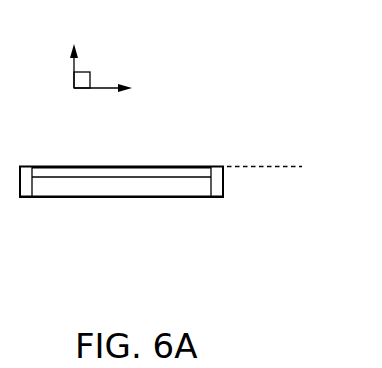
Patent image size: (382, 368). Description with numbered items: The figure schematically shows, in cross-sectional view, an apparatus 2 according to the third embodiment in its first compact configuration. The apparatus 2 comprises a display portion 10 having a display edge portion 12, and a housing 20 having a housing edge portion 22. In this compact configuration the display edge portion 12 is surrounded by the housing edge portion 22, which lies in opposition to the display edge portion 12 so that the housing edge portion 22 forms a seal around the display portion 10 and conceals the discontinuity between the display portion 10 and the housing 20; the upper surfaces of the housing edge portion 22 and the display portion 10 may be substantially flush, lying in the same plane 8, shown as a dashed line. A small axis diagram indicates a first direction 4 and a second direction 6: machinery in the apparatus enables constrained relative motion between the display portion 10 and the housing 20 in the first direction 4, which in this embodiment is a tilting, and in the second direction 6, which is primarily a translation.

The apparatus 2 is at (154, 174).
The first direction 4 is at (74, 67).
The second direction 6 is at (105, 88).
The plane 8 is at (276, 170).
The display portion 10 is at (140, 166).
The display edge portion 12 is at (203, 166).
The housing 20 is at (88, 198).
The housing edge portion 22 is at (224, 182).